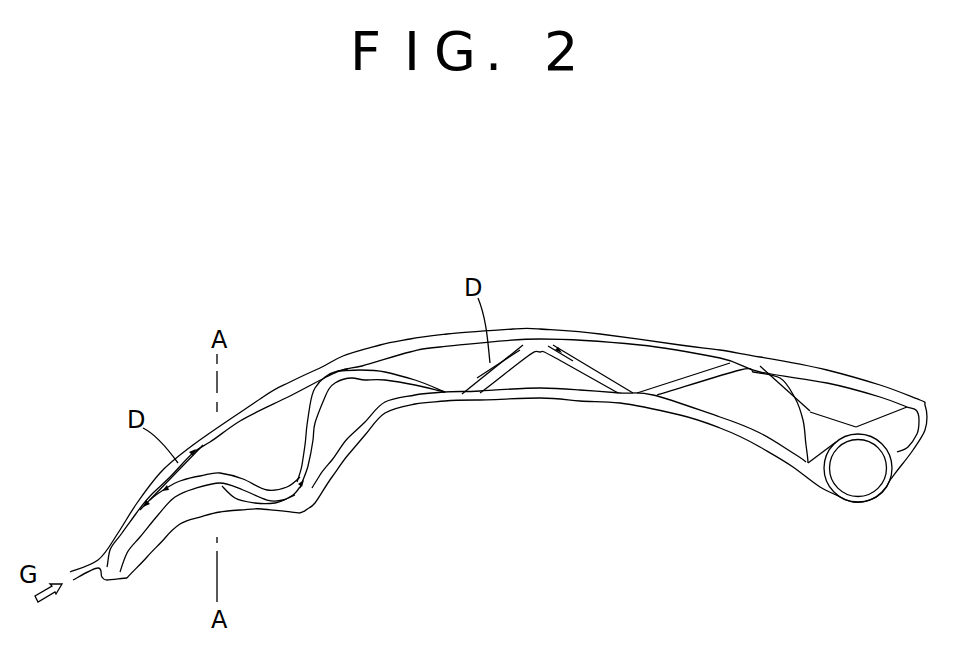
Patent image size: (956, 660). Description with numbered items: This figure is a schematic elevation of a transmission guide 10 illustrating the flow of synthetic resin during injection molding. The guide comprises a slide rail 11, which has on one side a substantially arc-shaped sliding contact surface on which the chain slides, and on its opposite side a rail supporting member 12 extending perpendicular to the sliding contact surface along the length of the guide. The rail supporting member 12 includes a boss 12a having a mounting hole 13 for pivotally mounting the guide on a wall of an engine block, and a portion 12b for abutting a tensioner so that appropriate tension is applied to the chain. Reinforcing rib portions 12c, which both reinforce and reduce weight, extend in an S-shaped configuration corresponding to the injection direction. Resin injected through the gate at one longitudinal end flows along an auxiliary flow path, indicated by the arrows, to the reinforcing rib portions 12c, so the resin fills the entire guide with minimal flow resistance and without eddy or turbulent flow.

The transmission guide 10 is at (500, 433).
The slide rail 11 is at (822, 368).
The rail supporting member 12 is at (728, 403).
The boss 12a is at (893, 484).
The portion for abutting a tensioner 12b is at (255, 512).
The reinforcing rib portions 12c is at (318, 420).
The mounting hole 13 is at (845, 484).